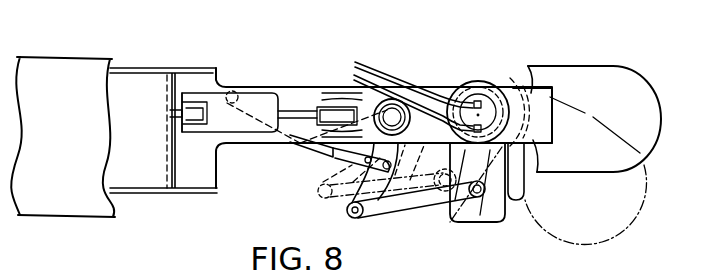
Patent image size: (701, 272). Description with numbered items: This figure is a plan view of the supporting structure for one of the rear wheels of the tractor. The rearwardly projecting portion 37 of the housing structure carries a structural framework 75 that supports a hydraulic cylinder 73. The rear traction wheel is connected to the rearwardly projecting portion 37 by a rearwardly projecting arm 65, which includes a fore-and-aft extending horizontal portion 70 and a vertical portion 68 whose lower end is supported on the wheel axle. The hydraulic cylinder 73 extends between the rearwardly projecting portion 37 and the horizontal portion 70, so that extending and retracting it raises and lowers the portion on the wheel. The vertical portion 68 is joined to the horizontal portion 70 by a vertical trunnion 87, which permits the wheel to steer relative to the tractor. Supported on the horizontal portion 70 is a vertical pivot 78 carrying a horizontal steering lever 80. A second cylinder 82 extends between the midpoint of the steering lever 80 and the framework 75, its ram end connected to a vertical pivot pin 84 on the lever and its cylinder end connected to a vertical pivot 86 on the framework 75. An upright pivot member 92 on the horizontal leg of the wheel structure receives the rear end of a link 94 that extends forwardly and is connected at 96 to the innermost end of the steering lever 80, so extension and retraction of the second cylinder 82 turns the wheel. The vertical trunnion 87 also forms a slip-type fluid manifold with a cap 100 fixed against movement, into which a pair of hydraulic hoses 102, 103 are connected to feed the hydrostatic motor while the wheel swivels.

The rearwardly projecting portion 37 is at (60, 70).
The structural framework 75 is at (135, 85).
The fore-and-aft extending horizontal portion 70 is at (300, 95).
The hydraulic cylinder 73 is at (263, 95).
The vertical pivot 86 is at (236, 91).
The vertical pivot 78 is at (392, 115).
The rearwardly projecting arm 65 is at (420, 83).
The cap 100 is at (510, 88).
The hydraulic hose 103 is at (453, 90).
The hydraulic hose 102 is at (427, 88).
The vertical trunnion 87 is at (528, 67).
The second cylinder 82 is at (333, 150).
The vertical pivot pin 84 is at (383, 171).
The connection 96 is at (347, 212).
The link 94 is at (415, 206).
The horizontal steering lever 80 is at (387, 190).
The upright pivot member 92 is at (500, 208).
The vertical portion 68 is at (517, 212).